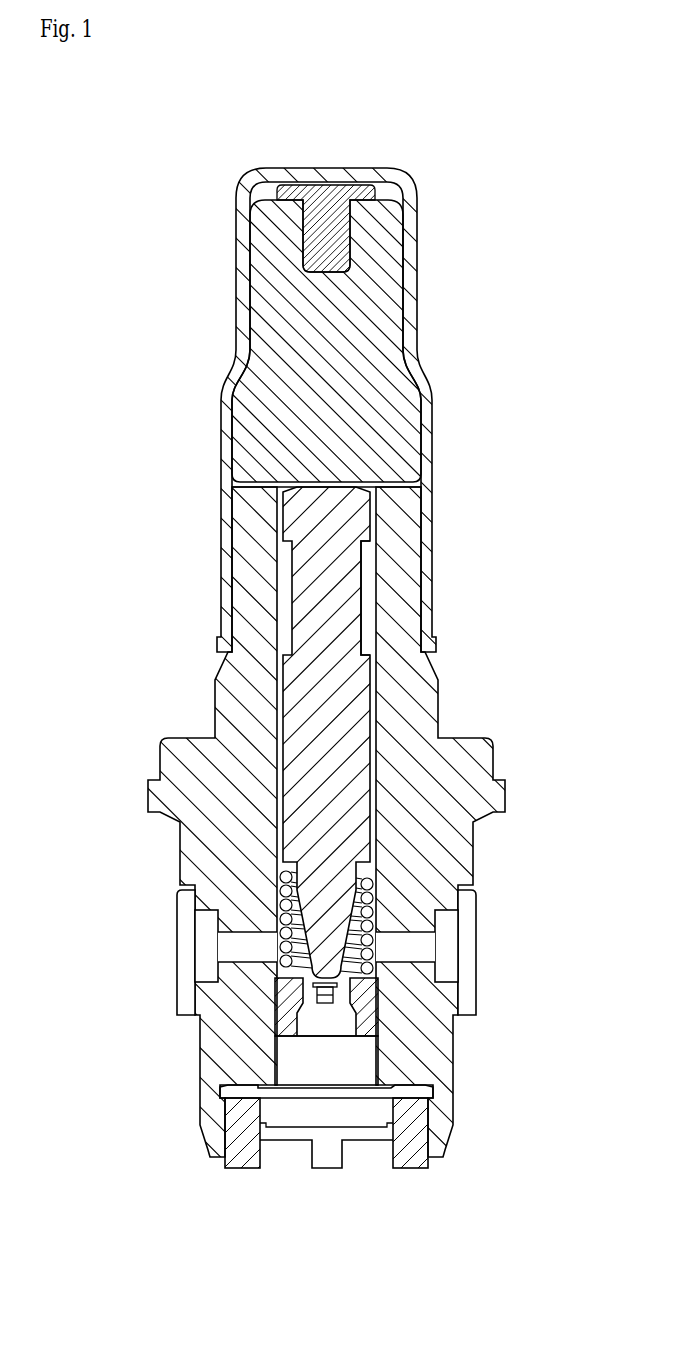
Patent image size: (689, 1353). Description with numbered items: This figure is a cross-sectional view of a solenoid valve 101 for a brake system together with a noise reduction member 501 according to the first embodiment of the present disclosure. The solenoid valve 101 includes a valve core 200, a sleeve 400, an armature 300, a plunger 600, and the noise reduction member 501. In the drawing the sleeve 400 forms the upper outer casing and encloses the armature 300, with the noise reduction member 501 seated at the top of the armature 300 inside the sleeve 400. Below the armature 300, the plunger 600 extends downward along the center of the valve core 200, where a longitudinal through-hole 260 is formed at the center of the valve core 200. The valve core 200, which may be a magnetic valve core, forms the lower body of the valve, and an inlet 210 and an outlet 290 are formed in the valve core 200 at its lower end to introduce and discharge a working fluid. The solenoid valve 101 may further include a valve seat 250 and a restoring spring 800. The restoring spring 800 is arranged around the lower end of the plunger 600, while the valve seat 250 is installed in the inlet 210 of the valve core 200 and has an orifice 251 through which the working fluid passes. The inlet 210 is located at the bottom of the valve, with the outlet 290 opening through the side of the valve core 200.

The solenoid valve 101 is at (126, 167).
The sleeve 400 is at (426, 243).
The armature 300 is at (406, 302).
The noise reduction member 501 is at (378, 186).
The plunger 600 is at (375, 521).
The longitudinal through-hole 260 is at (377, 578).
The valve core 200 is at (173, 865).
The restoring spring 800 is at (388, 877).
The outlet 290 is at (416, 956).
The valve seat 250 is at (388, 1020).
The orifice 251 is at (318, 993).
The inlet 210 is at (322, 1070).